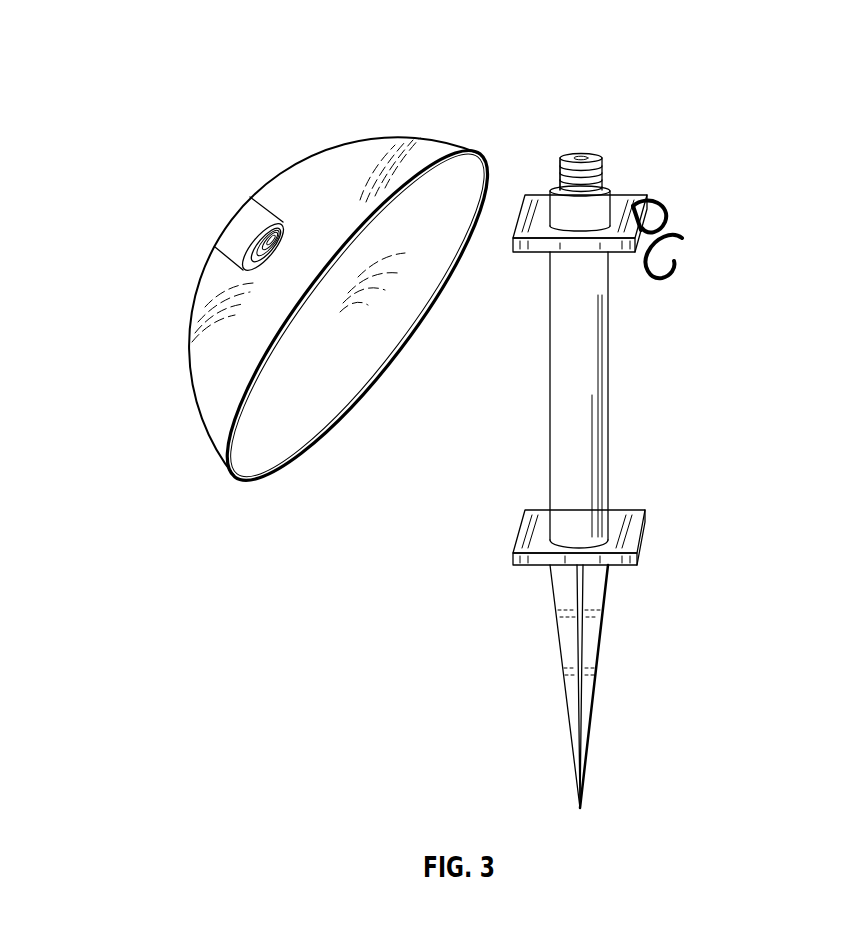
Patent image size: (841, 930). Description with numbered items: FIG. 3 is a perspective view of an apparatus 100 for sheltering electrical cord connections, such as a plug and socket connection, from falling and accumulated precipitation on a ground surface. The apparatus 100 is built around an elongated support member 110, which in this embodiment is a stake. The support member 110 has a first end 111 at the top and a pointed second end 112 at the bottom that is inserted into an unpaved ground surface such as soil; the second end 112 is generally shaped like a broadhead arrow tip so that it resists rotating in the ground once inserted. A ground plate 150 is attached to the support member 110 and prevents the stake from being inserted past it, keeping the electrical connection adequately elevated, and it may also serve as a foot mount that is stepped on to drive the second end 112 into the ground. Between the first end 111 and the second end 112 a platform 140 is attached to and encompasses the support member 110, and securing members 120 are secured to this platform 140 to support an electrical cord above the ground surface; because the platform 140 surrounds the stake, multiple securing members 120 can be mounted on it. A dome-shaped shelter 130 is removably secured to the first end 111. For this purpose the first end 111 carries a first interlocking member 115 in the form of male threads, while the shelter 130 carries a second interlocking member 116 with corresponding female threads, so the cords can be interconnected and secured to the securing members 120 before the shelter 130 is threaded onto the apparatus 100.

The apparatus 100 is at (733, 120).
The elongated support member 110 is at (605, 413).
The first end 111 is at (612, 168).
The second end 112 is at (583, 808).
The first interlocking member 115 is at (562, 163).
The second interlocking member 116 is at (245, 230).
The securing member 120 is at (683, 238).
The shelter 130 is at (232, 455).
The platform 140 is at (527, 224).
The ground plate 150 is at (637, 524).